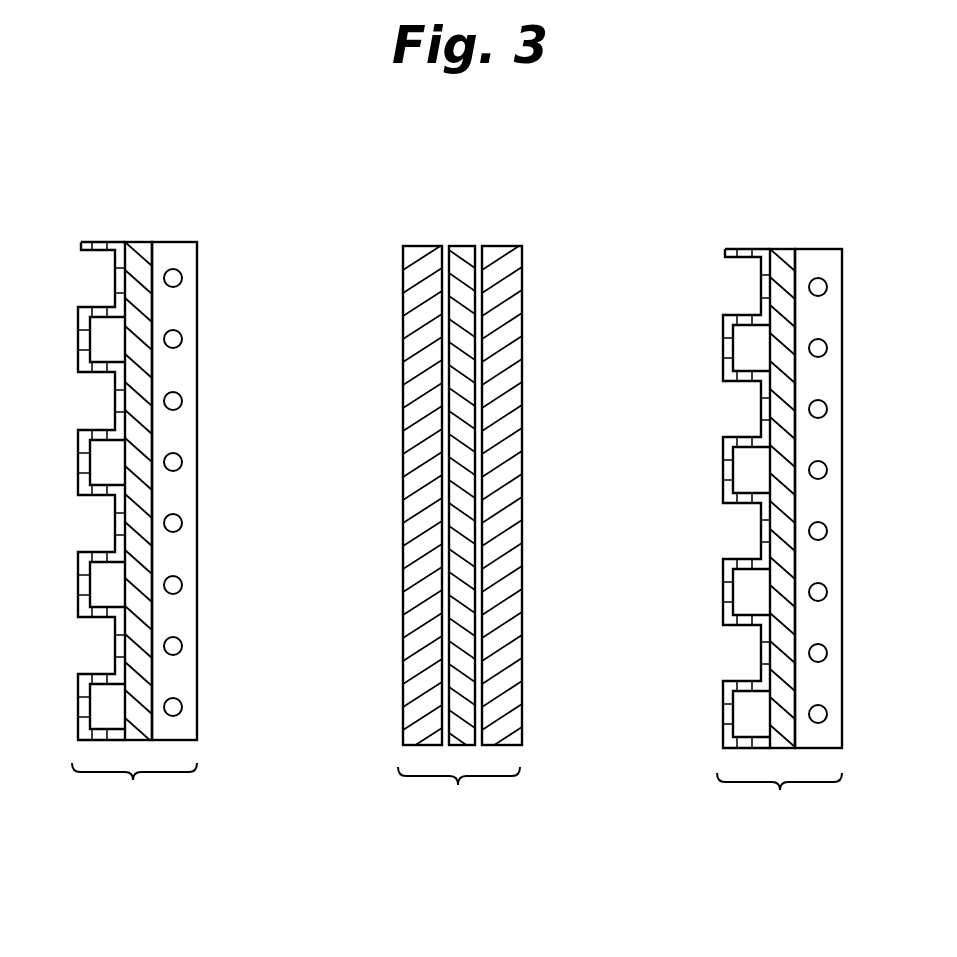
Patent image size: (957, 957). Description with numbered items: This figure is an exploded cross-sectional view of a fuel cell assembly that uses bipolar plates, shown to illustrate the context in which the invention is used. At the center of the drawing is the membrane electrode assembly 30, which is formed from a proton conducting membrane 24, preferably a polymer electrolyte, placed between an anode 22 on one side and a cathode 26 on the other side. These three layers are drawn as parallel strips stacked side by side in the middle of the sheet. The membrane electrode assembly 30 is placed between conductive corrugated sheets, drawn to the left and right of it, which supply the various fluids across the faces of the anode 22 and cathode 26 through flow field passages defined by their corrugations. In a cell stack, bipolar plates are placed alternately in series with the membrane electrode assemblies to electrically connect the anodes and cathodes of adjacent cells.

The anode 22 is at (422, 246).
The proton conducting membrane 24 is at (463, 246).
The cathode 26 is at (502, 246).
The membrane electrode assembly 30 is at (459, 795).